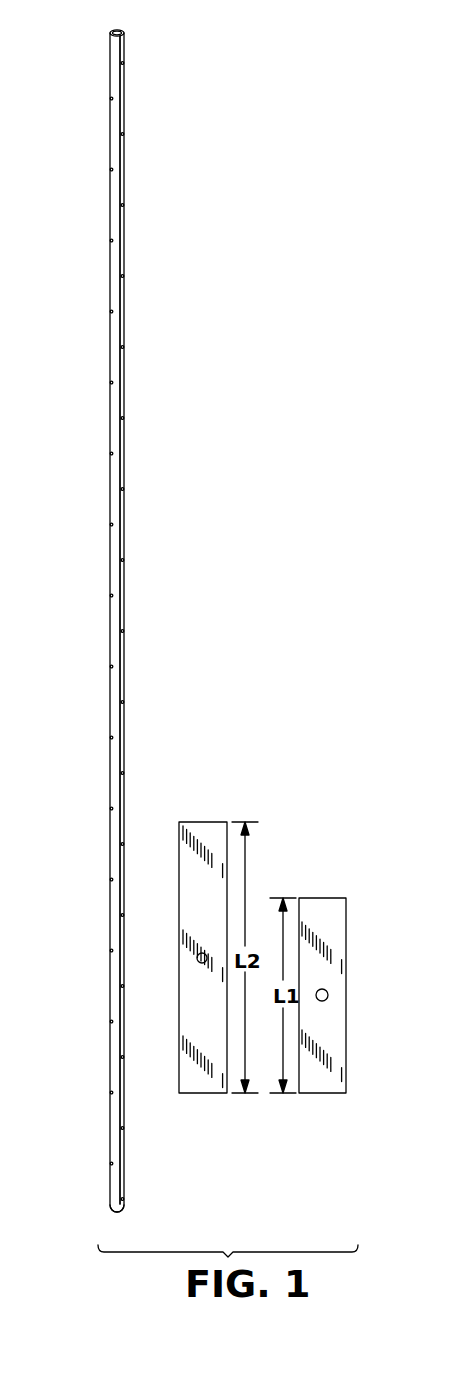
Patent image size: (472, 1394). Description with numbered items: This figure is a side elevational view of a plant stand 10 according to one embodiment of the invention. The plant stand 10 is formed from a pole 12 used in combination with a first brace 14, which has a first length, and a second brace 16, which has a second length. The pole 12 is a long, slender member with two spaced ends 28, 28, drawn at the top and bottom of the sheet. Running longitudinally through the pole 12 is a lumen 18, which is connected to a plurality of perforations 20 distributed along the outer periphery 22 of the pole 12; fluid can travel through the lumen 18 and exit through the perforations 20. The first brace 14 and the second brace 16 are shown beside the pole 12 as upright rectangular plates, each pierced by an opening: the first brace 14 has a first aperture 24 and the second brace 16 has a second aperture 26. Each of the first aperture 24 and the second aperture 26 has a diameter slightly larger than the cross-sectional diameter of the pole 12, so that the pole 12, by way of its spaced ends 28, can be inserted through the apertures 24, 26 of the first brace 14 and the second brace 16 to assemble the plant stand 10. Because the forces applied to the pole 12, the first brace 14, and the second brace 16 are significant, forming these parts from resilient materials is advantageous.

The plant stand 10 is at (249, 642).
The pole 12 is at (124, 372).
The first brace 14 is at (327, 898).
The second brace 16 is at (195, 822).
The lumen 18 is at (114, 32).
The perforations 20 is at (124, 205).
The outer periphery 22 is at (118, 262).
The first aperture 24 is at (328, 995).
The second aperture 26 is at (197, 958).
The spaced ends 28 is at (122, 31).